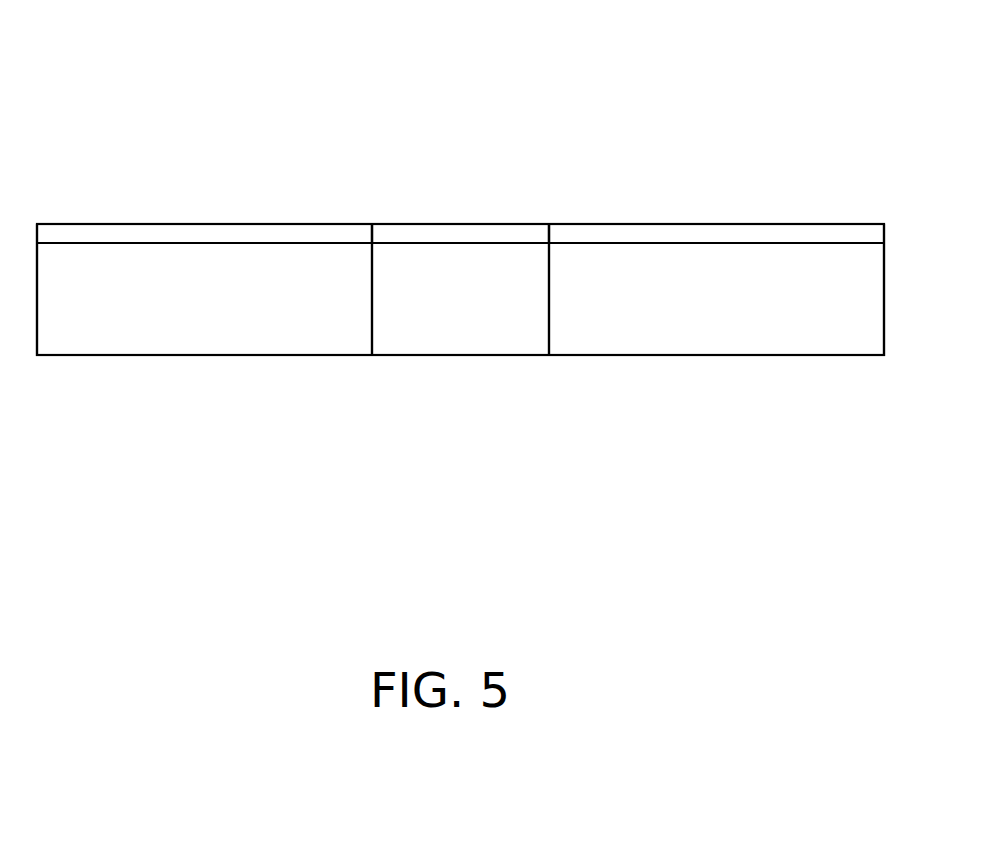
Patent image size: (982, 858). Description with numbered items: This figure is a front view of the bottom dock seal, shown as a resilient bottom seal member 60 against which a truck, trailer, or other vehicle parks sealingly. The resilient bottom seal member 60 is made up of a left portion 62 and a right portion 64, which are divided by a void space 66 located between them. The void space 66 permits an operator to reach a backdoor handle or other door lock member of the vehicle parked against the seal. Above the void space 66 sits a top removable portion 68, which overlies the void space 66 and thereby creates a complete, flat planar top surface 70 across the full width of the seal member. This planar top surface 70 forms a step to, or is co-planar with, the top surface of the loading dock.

The resilient bottom seal member 60 is at (761, 158).
The left portion 62 is at (209, 360).
The right portion 64 is at (714, 360).
The void space 66 is at (478, 270).
The top removable portion 68 is at (415, 232).
The planar top surface 70 is at (175, 223).